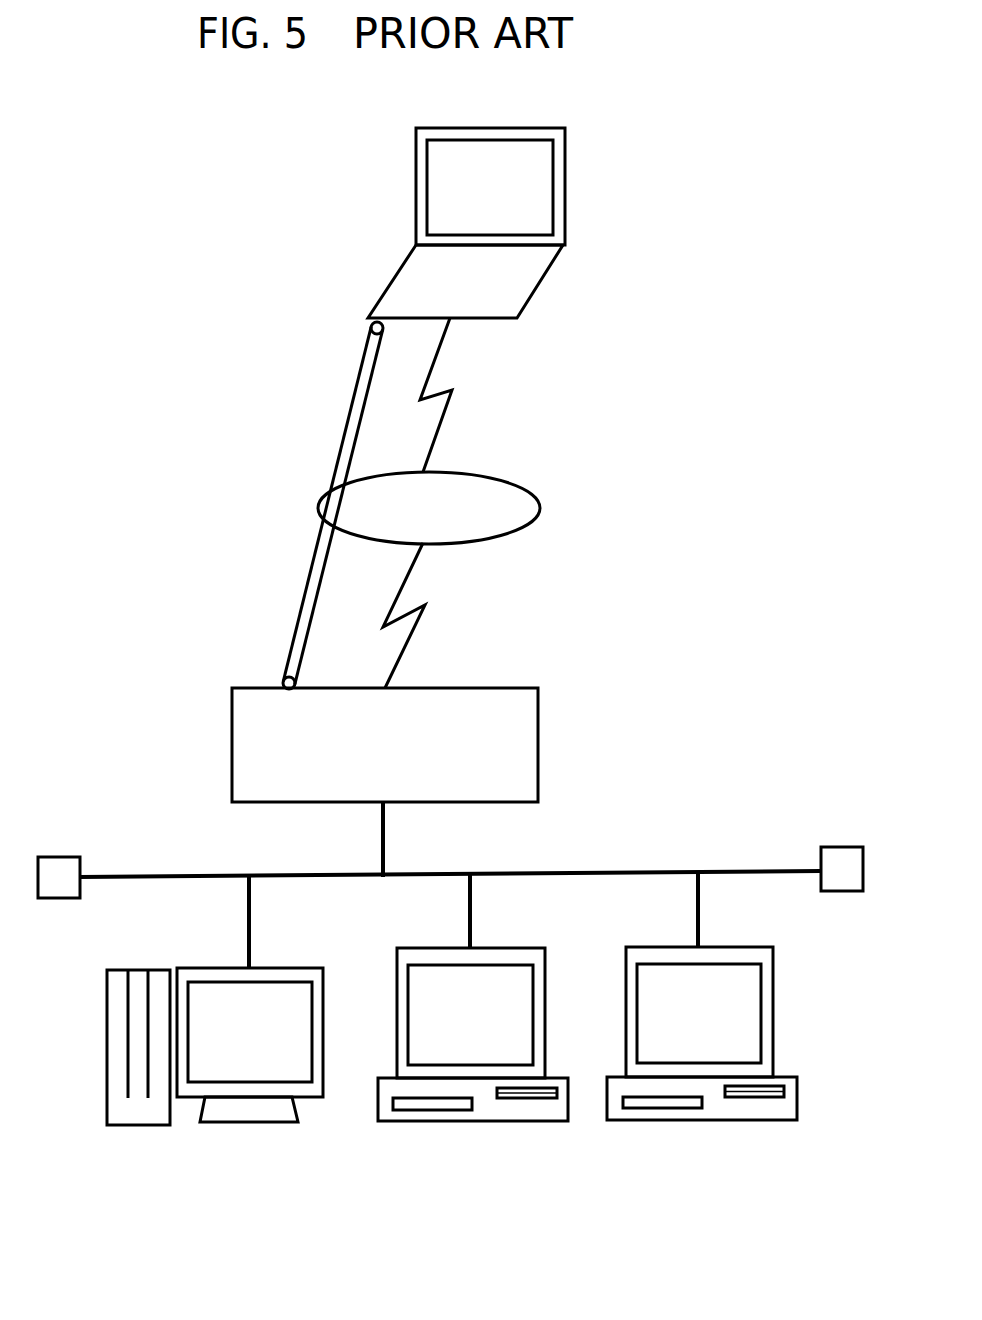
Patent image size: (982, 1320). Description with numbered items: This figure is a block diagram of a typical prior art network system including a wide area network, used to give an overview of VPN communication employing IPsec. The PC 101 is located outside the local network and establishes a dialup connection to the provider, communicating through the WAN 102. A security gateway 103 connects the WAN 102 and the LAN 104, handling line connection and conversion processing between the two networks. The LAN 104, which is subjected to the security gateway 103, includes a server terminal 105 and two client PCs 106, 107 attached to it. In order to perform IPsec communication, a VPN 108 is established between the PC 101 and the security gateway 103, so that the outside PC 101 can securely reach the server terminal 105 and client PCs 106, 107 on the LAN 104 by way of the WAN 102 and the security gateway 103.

The PC 101 is at (416, 175).
The WAN 102 is at (530, 490).
The security gateway 103 is at (540, 737).
The LAN 104 is at (172, 877).
The server terminal 105 is at (222, 1123).
The client PC 106 is at (472, 1122).
The client PC 107 is at (715, 1121).
The VPN 108 is at (343, 425).